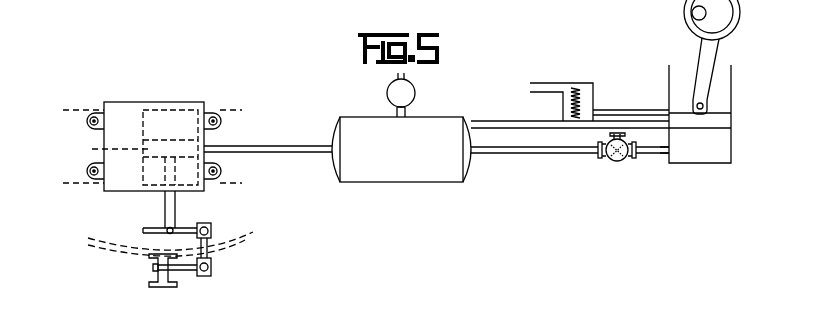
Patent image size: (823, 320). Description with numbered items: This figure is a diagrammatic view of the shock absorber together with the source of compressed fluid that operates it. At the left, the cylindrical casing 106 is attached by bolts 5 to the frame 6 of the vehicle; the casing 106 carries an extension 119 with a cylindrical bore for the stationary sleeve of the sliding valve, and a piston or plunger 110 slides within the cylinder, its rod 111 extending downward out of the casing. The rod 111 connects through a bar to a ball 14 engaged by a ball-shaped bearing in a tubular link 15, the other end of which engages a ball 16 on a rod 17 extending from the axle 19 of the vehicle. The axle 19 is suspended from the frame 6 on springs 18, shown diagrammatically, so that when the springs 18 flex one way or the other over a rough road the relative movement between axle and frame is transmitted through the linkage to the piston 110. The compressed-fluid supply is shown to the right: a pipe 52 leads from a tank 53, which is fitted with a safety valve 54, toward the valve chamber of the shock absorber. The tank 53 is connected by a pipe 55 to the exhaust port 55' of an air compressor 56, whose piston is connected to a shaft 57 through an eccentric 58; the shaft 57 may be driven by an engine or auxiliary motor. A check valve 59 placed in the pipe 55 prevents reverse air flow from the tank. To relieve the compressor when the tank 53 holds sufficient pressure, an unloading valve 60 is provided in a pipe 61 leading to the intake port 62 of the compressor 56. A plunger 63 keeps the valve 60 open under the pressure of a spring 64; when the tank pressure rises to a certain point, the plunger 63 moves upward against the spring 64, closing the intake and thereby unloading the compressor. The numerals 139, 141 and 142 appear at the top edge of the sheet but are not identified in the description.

The bolts 5 is at (220, 122).
The frame 6 is at (240, 110).
The ball 14 is at (212, 229).
The tubular link 15 is at (209, 250).
The ball 16 is at (212, 268).
The rod 17 is at (188, 272).
The springs 18 is at (243, 243).
The axle 19 is at (163, 278).
The pipe 52 is at (282, 145).
The tank 53 is at (440, 182).
The safety valve 54 is at (416, 92).
The pipe 55 is at (570, 161).
The exhaust port 55' is at (682, 171).
The air compressor 56 is at (733, 138).
The shaft 57 is at (691, 13).
The eccentric 58 is at (728, 13).
The check valve 59 is at (617, 161).
The unloading valve 60 is at (583, 86).
The pipe 61 is at (610, 108).
The intake port 62 is at (668, 112).
The plunger 63 is at (563, 118).
The spring 64 is at (573, 93).
The cylindrical casing 106 is at (192, 102).
The piston 110 is at (106, 148).
The rod 111 is at (180, 203).
The extension 119 is at (112, 102).
The component 139 is at (502, 7).
The component 141 is at (432, 8).
The component 142 is at (462, 8).